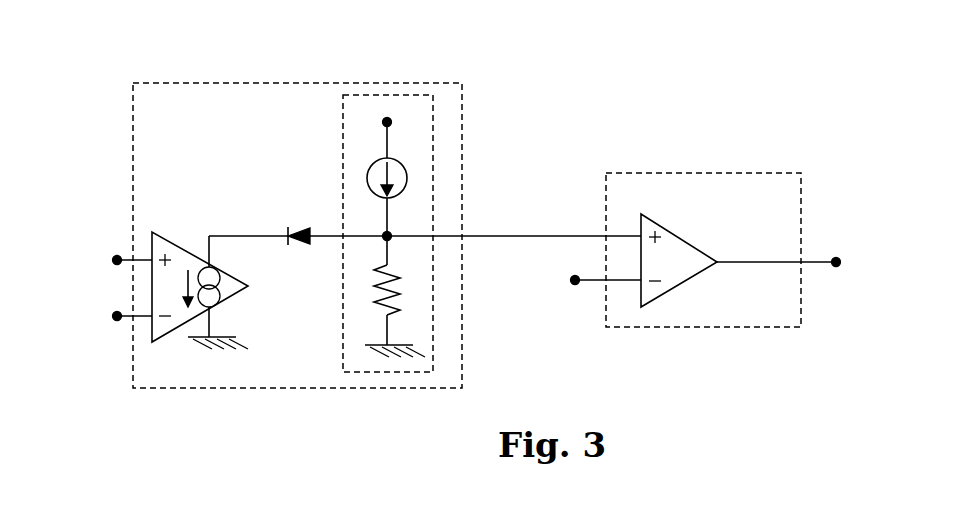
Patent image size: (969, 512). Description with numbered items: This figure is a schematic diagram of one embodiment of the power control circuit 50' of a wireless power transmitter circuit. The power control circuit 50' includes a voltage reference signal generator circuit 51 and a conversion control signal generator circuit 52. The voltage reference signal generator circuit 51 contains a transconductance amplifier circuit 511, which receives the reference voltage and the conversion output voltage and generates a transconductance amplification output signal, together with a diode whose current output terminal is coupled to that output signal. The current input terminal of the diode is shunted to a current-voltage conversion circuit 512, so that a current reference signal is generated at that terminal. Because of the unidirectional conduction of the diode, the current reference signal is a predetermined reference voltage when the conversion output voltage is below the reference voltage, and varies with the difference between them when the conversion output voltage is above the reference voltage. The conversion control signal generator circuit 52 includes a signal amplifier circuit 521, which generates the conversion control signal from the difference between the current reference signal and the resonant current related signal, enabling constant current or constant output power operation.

The power control circuit 50' is at (452, 211).
The voltage reference signal generator circuit 51 is at (183, 83).
The transconductance amplifier circuit 511 is at (165, 232).
The current-voltage conversion circuit 512 is at (343, 152).
The conversion control signal generator circuit 52 is at (705, 173).
The signal amplifier circuit 521 is at (708, 248).